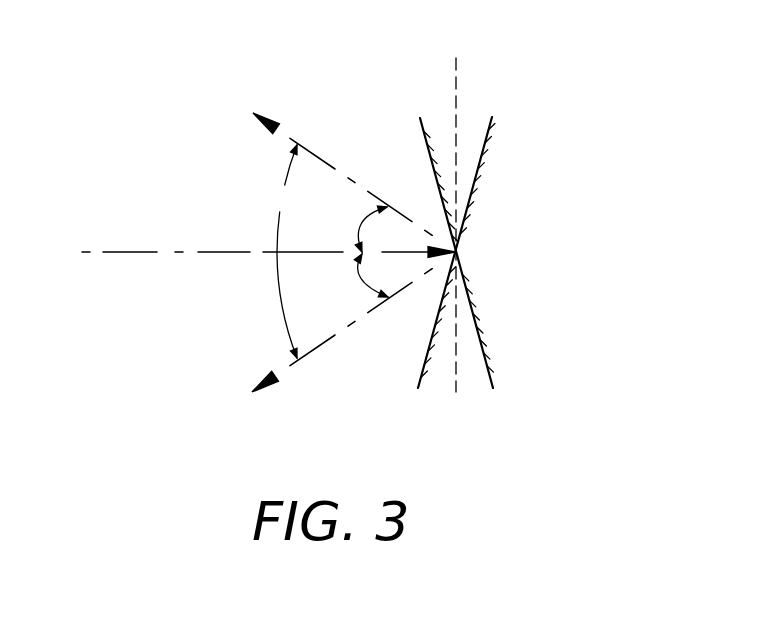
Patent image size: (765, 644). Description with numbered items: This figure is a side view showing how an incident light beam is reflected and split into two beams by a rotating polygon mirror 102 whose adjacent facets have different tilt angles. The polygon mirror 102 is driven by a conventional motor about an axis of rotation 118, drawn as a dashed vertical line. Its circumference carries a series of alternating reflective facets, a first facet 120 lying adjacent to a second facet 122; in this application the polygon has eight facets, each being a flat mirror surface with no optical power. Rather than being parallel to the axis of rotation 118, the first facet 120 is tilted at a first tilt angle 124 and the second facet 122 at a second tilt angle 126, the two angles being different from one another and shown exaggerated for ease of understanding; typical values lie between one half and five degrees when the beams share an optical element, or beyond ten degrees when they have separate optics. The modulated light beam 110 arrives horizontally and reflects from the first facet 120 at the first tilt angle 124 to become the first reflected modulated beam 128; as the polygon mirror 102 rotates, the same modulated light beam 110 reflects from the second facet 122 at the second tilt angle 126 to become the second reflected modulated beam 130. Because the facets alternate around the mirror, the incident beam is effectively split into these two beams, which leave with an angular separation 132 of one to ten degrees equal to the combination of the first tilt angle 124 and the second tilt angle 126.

The polygon mirror 102 is at (562, 188).
The modulated light beam 110 is at (198, 252).
The axis of rotation 118 is at (458, 80).
The first facet 120 is at (487, 134).
The second facet 122 is at (423, 135).
The first tilt angle 124 is at (370, 212).
The second tilt angle 126 is at (373, 292).
The first reflected modulated beam 128 is at (317, 152).
The second reflected modulated beam 130 is at (309, 353).
The angular separation 132 is at (287, 251).